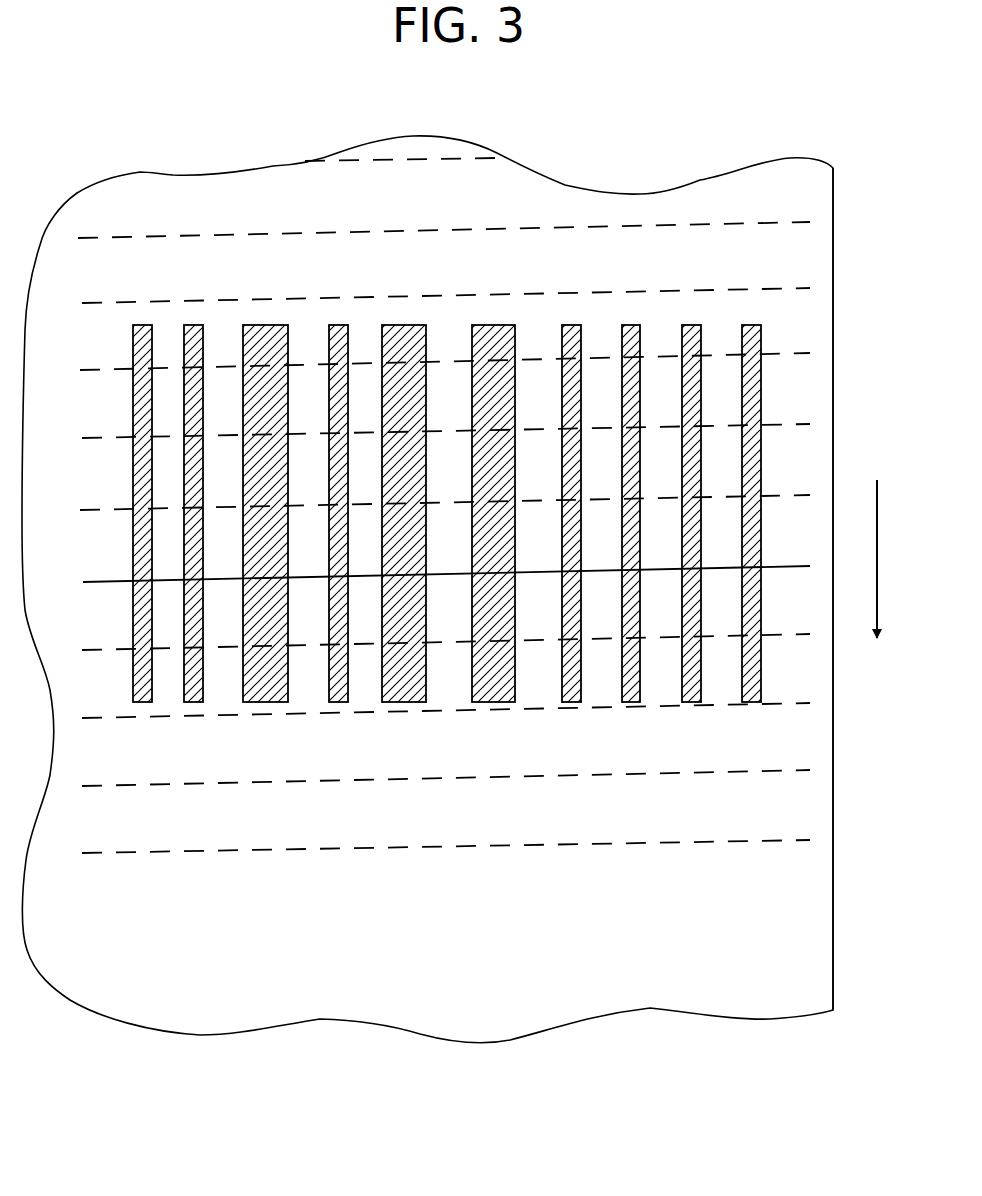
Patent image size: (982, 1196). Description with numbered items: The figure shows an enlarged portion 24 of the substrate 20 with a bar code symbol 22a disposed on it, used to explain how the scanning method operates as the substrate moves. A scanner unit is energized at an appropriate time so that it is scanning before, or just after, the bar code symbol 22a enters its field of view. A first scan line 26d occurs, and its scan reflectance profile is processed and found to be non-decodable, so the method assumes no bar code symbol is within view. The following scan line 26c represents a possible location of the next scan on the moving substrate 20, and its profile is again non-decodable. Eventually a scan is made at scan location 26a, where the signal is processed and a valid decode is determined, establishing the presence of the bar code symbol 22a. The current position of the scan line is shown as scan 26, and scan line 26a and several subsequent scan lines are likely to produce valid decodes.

The substrate 20 is at (735, 207).
The bar code symbol 22a is at (844, 326).
The enlarged portion 24 is at (148, 145).
The scan 26 is at (112, 582).
The scan line 26a is at (100, 650).
The scan line 26c is at (133, 787).
The first scan line 26d is at (124, 853).